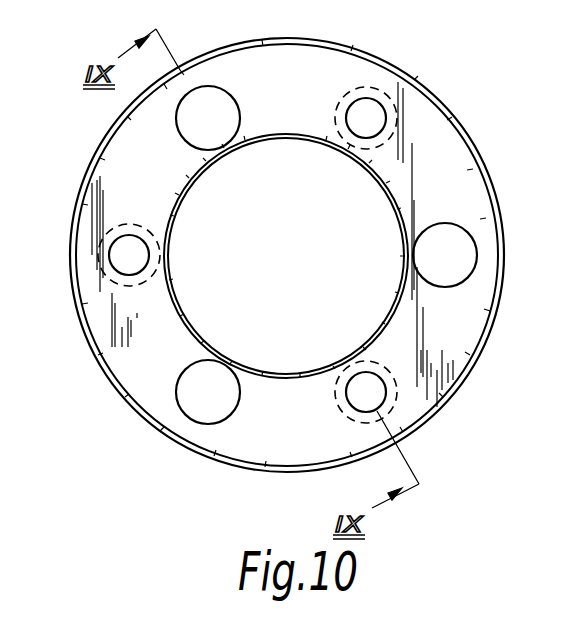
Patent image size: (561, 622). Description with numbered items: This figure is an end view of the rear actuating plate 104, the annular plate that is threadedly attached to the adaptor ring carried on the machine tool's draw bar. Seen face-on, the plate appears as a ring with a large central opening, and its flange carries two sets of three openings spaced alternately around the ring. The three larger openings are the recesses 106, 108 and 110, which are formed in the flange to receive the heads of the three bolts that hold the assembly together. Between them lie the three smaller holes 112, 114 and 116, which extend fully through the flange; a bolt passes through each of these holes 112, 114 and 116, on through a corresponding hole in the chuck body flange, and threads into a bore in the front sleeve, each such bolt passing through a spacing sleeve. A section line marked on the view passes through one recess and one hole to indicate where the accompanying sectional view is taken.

The rear actuating plate 104 is at (372, 57).
The recess 106 is at (198, 95).
The recess 108 is at (445, 240).
The recess 110 is at (200, 405).
The hole 112 is at (370, 392).
The hole 114 is at (120, 248).
The hole 116 is at (372, 115).